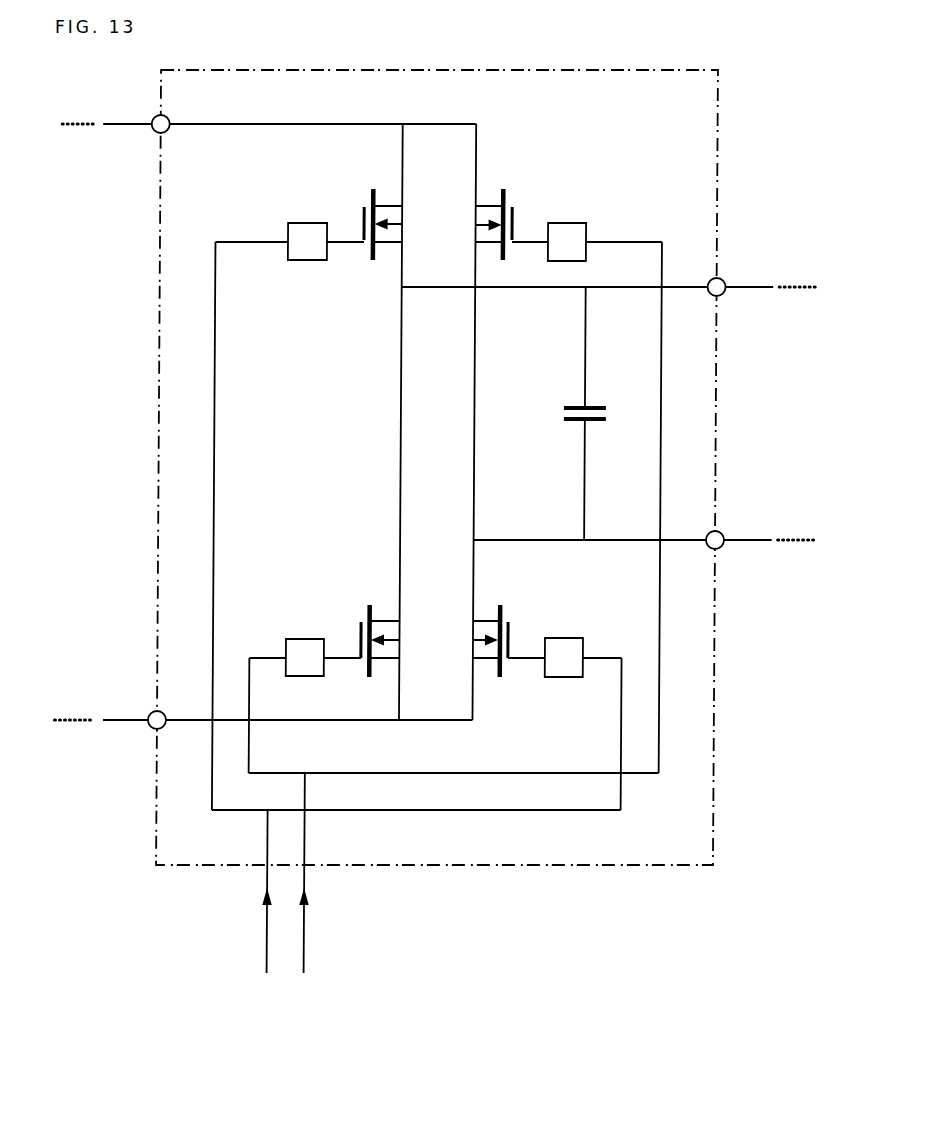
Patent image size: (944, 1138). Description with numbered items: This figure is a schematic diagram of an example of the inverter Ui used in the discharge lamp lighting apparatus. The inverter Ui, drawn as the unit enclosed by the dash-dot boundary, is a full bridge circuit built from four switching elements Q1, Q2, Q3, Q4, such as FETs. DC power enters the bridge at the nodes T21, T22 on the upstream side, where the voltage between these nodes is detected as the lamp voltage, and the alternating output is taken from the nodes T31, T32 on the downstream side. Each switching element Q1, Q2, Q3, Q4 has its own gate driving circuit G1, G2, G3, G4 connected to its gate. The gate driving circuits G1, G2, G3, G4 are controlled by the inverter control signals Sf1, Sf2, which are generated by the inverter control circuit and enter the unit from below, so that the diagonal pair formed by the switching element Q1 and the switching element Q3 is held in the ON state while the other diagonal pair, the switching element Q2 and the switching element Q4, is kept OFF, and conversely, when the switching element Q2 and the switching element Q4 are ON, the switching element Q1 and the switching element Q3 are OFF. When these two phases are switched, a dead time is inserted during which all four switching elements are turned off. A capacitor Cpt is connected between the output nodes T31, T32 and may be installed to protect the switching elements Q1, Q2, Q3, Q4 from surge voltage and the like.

The inverter Ui is at (158, 423).
The node T21 is at (154, 118).
The node T22 is at (156, 727).
The node T31 is at (728, 287).
The node T32 is at (728, 539).
The switching element Q1 is at (372, 192).
The switching element Q2 is at (372, 613).
The switching element Q3 is at (507, 610).
The switching element Q4 is at (510, 197).
The gate driving circuit G1 is at (305, 223).
The gate driving circuit G2 is at (307, 639).
The gate driving circuit G3 is at (570, 638).
The gate driving circuit G4 is at (572, 223).
The capacitor Cpt is at (582, 405).
The inverter control signal Sf1 is at (273, 938).
The inverter control signal Sf2 is at (310, 938).